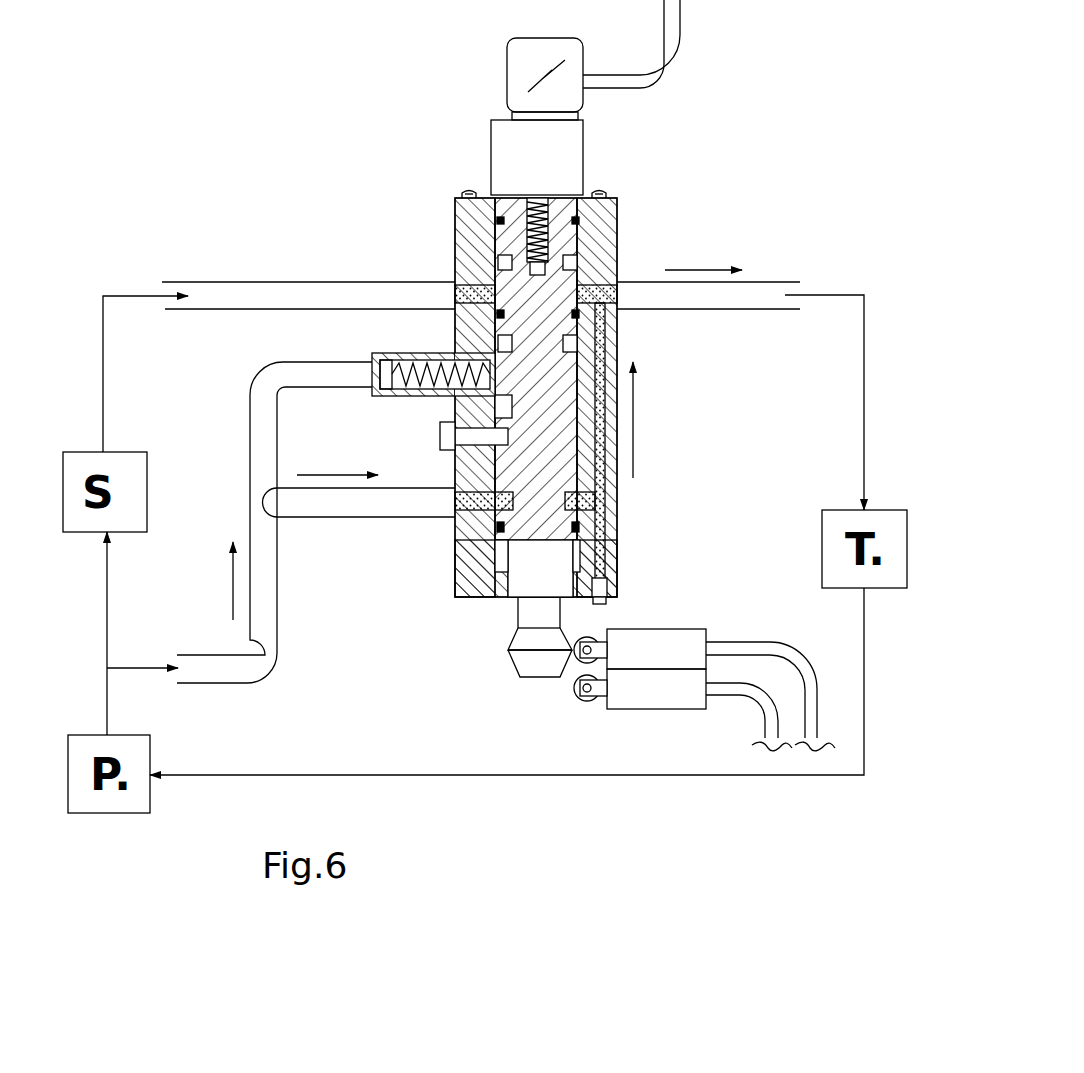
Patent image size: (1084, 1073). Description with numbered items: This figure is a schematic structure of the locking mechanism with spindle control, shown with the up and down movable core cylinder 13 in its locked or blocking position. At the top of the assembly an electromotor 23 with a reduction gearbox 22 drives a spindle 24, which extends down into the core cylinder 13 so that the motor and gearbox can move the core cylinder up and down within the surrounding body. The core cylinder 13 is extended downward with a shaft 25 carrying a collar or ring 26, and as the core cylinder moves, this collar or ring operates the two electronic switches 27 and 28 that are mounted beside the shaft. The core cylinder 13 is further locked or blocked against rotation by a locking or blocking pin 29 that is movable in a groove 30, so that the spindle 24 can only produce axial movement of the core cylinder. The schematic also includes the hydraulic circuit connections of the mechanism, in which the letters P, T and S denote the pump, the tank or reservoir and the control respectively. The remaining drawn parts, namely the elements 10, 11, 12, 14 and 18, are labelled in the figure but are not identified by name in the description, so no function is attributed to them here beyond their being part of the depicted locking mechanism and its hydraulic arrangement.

The supply pipe 10 is at (263, 583).
The conduit 11 is at (362, 300).
The conduit 12 is at (693, 298).
The core cylinder 13 is at (552, 465).
The housing 14 is at (470, 250).
The spring 18 is at (398, 398).
The reduction gearbox 22 is at (567, 143).
The electromotor 23 is at (572, 52).
The spindle 24 is at (565, 222).
The shaft 25 is at (533, 607).
The collar or ring 26 is at (518, 647).
The electronic switch 27 is at (640, 643).
The electronic switch 28 is at (642, 693).
The locking or blocking pin 29 is at (455, 448).
The groove 30 is at (506, 415).